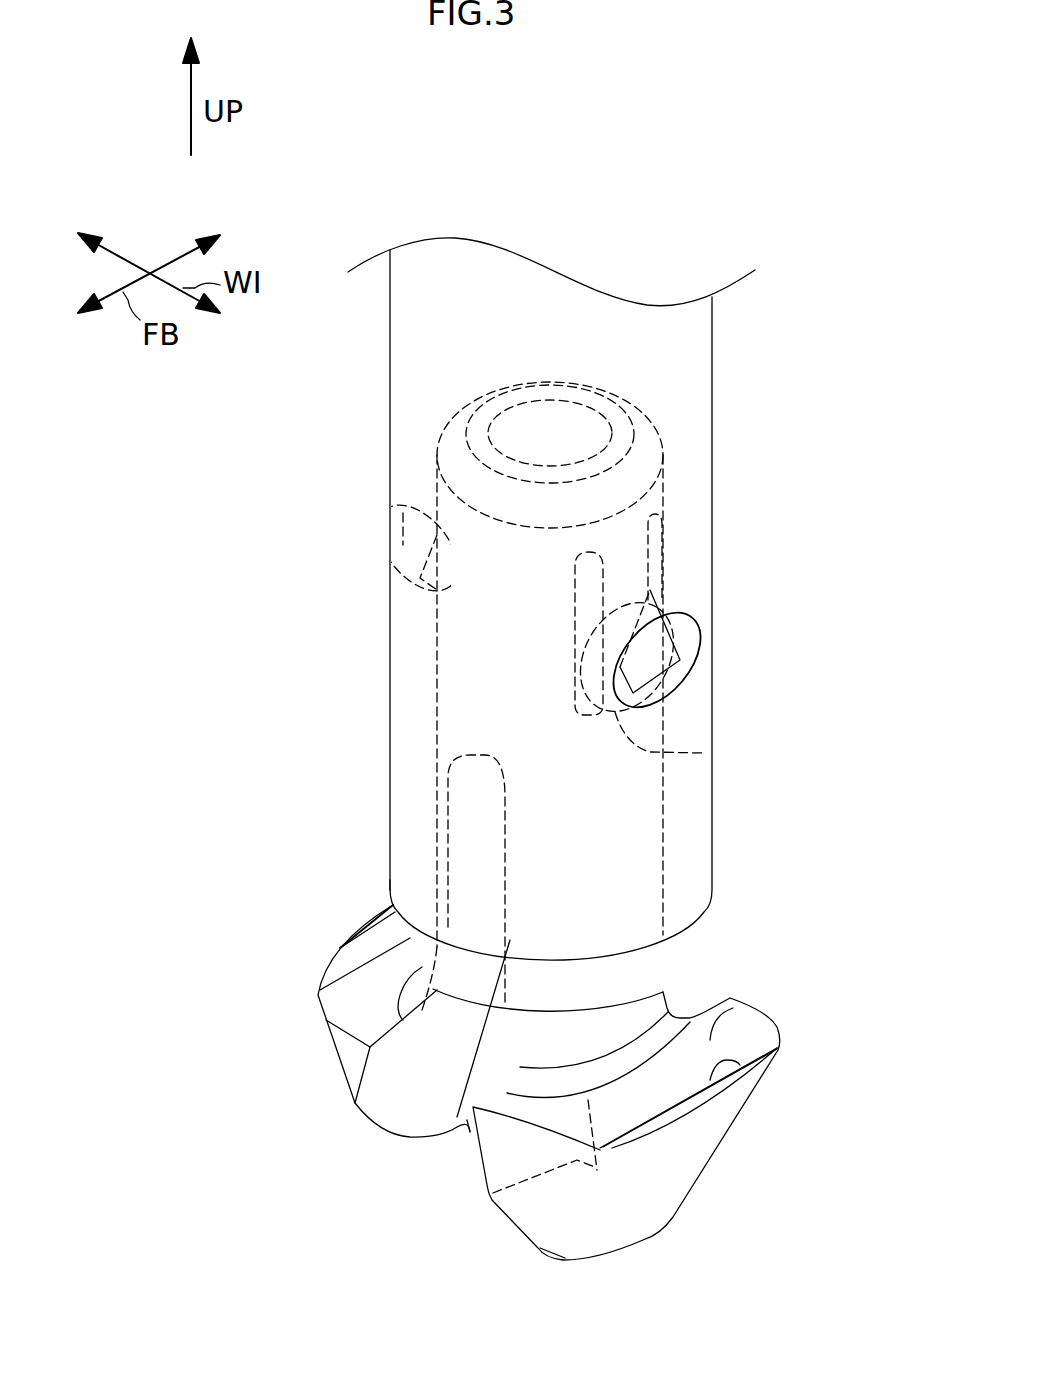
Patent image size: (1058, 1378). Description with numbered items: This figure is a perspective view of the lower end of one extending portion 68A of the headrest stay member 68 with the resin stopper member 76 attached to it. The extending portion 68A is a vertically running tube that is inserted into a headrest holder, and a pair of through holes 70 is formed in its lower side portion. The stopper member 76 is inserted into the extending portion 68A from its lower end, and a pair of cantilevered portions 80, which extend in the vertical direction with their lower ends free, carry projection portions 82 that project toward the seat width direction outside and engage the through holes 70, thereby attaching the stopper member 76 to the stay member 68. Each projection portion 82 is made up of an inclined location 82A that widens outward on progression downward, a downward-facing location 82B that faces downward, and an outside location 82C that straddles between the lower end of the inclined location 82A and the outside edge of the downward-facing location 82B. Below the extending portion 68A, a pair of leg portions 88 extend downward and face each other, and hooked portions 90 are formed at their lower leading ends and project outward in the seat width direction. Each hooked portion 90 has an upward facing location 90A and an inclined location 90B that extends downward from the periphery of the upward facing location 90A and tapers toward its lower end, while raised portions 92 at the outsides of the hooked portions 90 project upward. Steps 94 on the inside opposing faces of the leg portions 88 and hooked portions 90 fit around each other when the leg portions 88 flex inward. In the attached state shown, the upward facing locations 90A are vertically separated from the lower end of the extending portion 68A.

The stay member 68 is at (612, 624).
The extending portion 68A is at (712, 375).
The through hole 70 is at (403, 514).
The stopper member 76 is at (287, 1273).
The cantilevered portion 80 is at (633, 562).
The projection portion 82 is at (820, 670).
The inclined location 82A is at (657, 655).
The downward-facing location 82B is at (703, 753).
The outside location 82C is at (663, 682).
The leg portion 88 is at (437, 820).
The hooked portion 90 is at (315, 1082).
The upward facing location 90A is at (740, 1014).
The inclined location 90B is at (693, 1167).
The raised portion 92 is at (363, 920).
The step 94 is at (465, 1130).